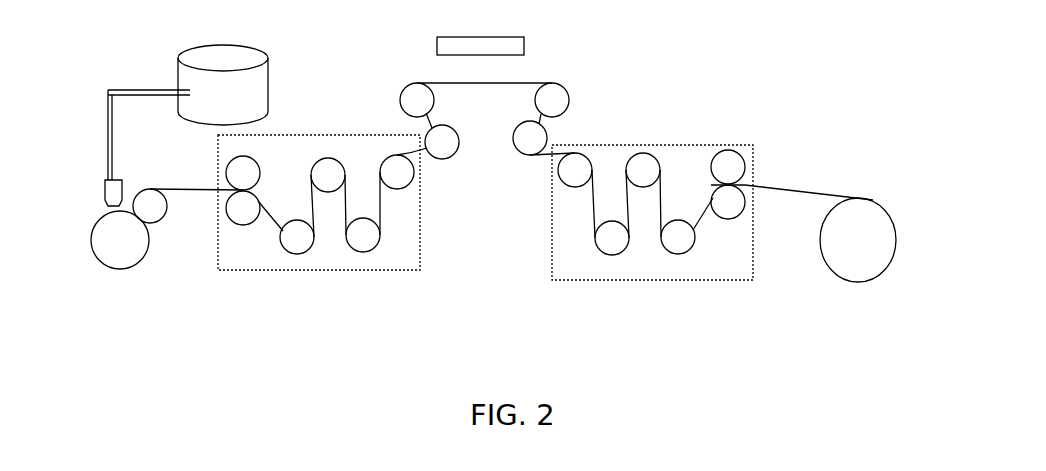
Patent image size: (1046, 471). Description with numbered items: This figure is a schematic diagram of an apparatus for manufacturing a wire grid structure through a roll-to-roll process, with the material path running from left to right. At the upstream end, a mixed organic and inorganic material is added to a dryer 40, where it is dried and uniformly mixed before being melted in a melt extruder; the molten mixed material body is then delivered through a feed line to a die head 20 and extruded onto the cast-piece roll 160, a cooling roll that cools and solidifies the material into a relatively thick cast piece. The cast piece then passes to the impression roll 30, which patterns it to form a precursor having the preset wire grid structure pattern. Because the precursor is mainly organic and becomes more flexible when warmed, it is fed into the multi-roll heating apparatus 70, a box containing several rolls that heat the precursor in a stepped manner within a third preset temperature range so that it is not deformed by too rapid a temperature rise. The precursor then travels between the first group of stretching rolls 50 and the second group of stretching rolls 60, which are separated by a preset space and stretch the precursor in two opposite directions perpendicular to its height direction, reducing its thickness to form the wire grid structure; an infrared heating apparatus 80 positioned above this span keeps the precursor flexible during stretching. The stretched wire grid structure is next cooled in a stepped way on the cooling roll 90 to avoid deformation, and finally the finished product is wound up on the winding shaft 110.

The coating nozzle 20 is at (103, 197).
The impression roll 30 is at (163, 224).
The dryer 40 is at (242, 52).
The first group of stretching rolls 50 is at (398, 88).
The second group of stretching rolls 60 is at (567, 82).
The multi-roll heating apparatus 70 is at (343, 275).
The infrared heating apparatus 80 is at (477, 33).
The cooling roll 90 is at (645, 285).
The winding shaft 110 is at (897, 247).
The cast-piece roll 160 is at (130, 273).